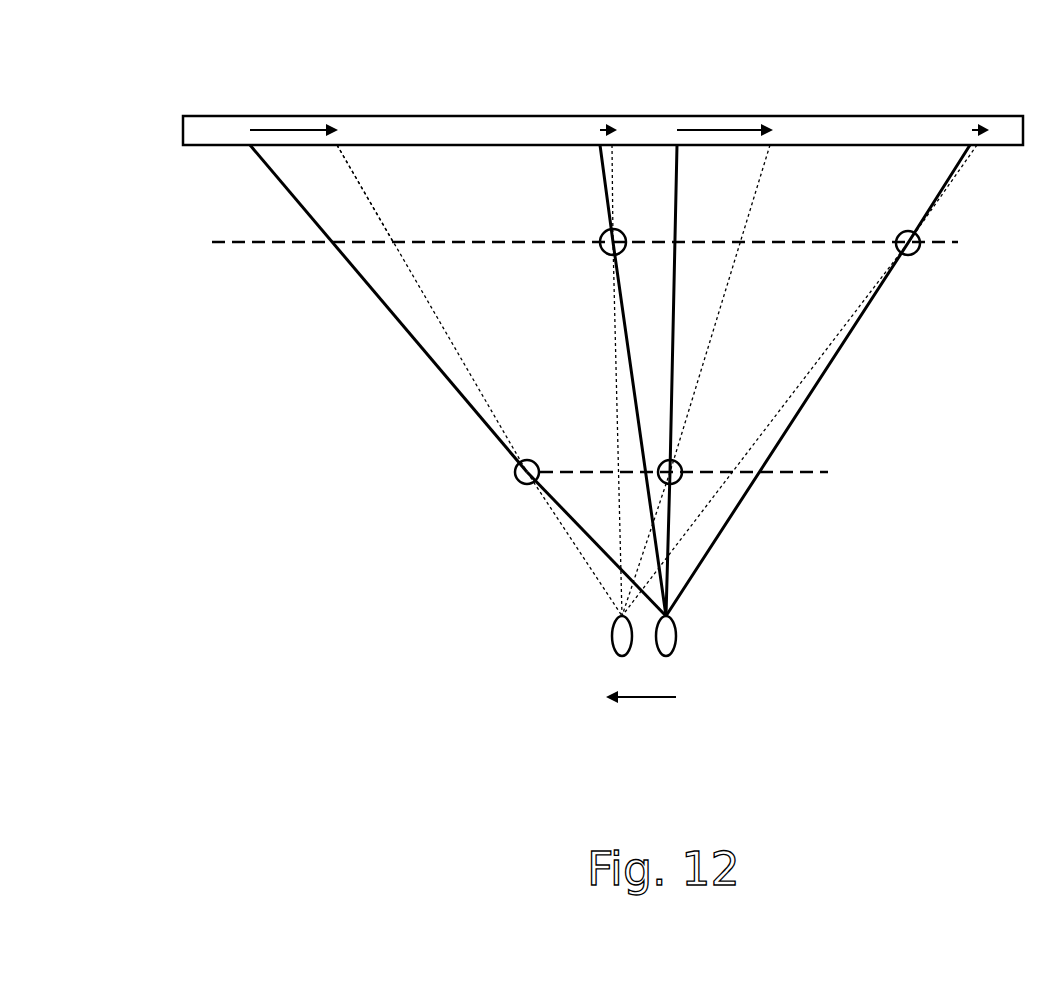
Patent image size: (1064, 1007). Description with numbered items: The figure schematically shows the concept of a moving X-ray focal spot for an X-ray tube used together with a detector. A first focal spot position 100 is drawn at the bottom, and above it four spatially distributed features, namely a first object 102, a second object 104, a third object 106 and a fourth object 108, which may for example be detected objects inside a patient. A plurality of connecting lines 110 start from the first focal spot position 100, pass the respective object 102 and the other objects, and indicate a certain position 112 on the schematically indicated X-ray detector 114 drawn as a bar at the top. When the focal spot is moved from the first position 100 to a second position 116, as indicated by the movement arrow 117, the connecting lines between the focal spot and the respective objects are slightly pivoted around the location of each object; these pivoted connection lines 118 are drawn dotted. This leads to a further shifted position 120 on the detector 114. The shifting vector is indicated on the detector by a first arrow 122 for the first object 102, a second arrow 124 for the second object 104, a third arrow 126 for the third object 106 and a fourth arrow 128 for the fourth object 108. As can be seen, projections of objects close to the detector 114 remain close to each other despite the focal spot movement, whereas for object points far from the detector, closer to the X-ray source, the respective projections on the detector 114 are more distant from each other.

The first focal spot position 100 is at (676, 650).
The first object 102 is at (518, 480).
The second object 104 is at (675, 462).
The third object 106 is at (606, 250).
The fourth object 108 is at (915, 252).
The connecting lines 110 is at (572, 530).
The position on X-ray detector 112 is at (250, 148).
The X-ray detector 114 is at (213, 122).
The second focal spot position 116 is at (612, 650).
The movement arrow 117 is at (647, 700).
The pivoted connection lines 118 is at (425, 298).
The shifted position 120 is at (340, 148).
The first arrow 122 is at (298, 130).
The second arrow 124 is at (720, 130).
The third arrow 126 is at (601, 130).
The fourth arrow 128 is at (972, 130).